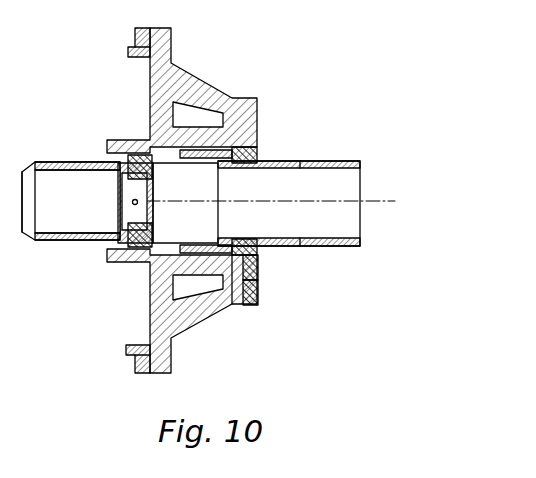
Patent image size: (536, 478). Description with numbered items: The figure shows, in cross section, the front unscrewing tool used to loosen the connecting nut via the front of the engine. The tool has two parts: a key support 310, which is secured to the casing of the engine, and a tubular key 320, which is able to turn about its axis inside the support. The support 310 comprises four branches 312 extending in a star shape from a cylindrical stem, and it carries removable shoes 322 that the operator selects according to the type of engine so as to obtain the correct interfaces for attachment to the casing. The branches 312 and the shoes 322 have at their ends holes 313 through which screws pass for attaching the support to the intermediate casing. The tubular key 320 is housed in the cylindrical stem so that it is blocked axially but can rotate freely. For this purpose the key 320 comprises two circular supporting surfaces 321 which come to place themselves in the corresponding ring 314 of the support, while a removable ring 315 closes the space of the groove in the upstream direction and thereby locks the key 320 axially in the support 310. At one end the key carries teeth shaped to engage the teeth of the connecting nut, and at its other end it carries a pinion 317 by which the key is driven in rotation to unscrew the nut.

The key support 310 is at (258, 289).
The branches 312 is at (193, 297).
The holes 313 is at (138, 362).
The ring 314 is at (226, 300).
The removable ring 315 is at (260, 264).
The pinion 317 is at (349, 161).
The tubular key 320 is at (295, 246).
The circular supporting surfaces 321 is at (257, 123).
The removable shoes 322 is at (128, 48).